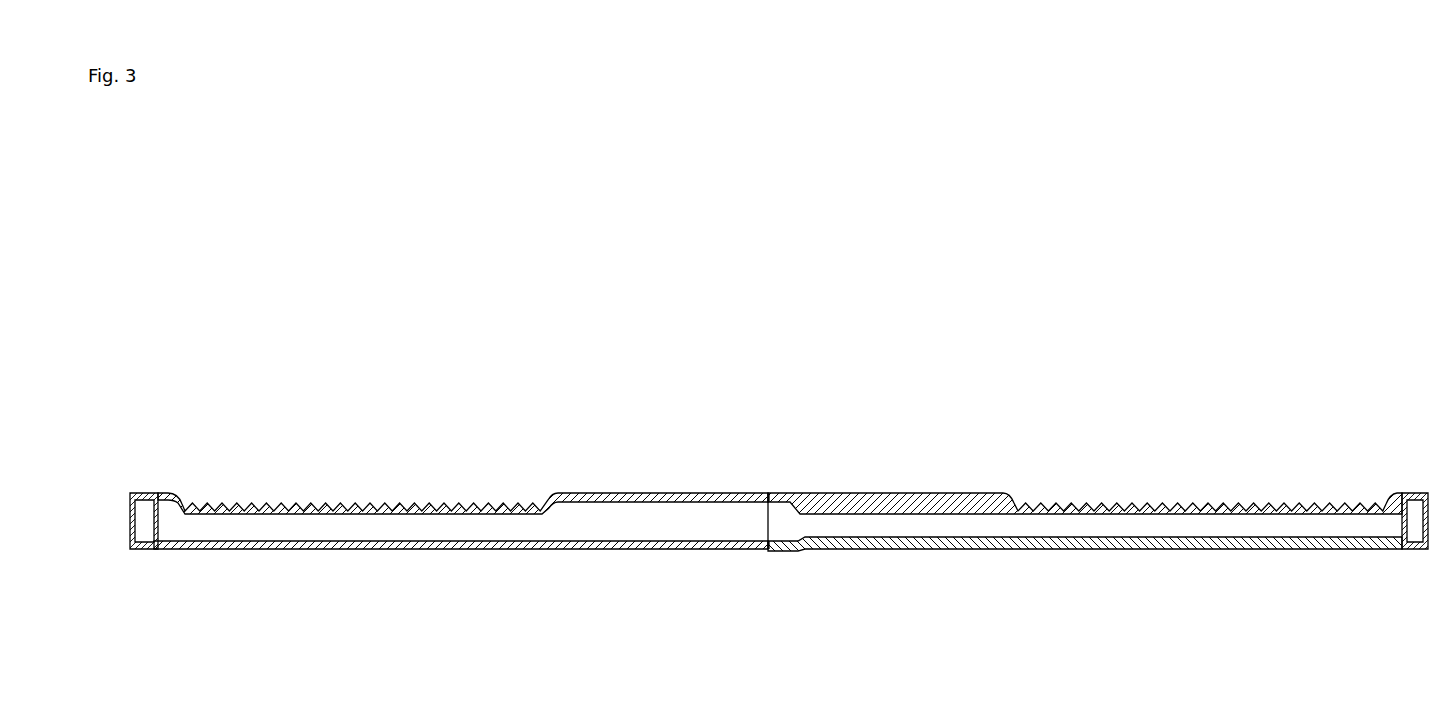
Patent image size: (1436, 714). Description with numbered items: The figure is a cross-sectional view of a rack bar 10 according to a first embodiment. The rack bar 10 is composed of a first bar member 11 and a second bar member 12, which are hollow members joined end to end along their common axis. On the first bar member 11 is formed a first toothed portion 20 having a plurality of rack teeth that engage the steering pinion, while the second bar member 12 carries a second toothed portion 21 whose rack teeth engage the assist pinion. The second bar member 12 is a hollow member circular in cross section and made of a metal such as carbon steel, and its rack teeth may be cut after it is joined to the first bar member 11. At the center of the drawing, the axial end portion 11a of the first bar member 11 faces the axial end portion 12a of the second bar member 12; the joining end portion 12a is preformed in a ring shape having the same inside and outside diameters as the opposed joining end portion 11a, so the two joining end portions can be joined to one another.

The rack bar 10 is at (1228, 300).
The first bar member 11 is at (562, 566).
The axial end portion of the first bar member 11a is at (760, 494).
The second bar member 12 is at (969, 567).
The axial end portion of the second bar member 12a is at (772, 494).
The first toothed portion 20 is at (337, 503).
The second toothed portion 21 is at (1186, 505).